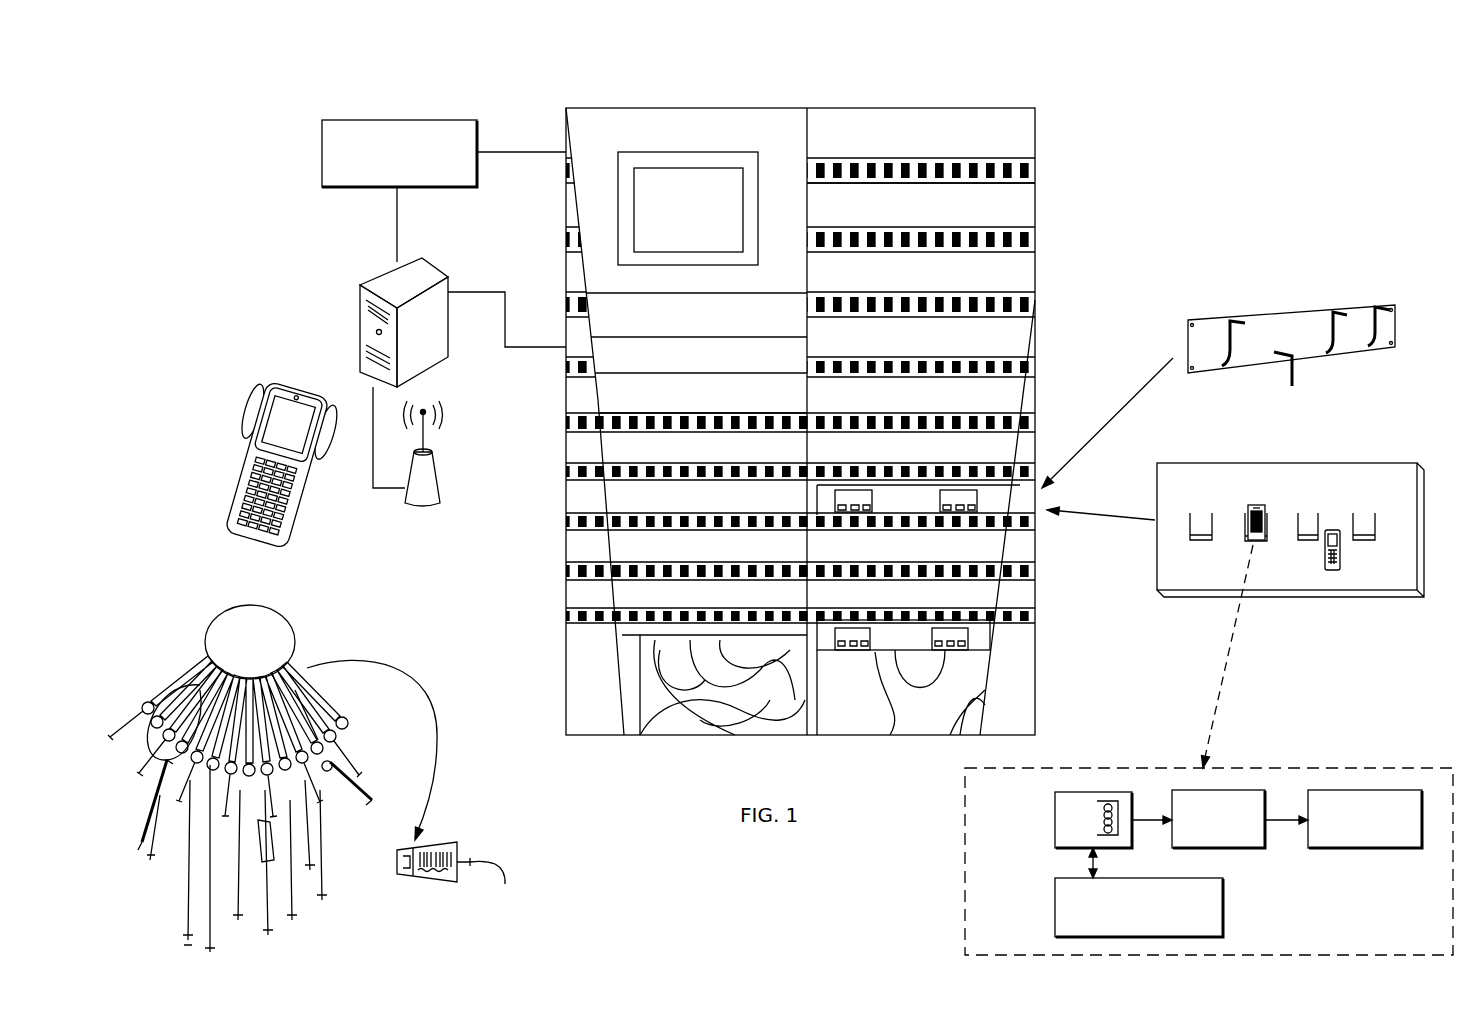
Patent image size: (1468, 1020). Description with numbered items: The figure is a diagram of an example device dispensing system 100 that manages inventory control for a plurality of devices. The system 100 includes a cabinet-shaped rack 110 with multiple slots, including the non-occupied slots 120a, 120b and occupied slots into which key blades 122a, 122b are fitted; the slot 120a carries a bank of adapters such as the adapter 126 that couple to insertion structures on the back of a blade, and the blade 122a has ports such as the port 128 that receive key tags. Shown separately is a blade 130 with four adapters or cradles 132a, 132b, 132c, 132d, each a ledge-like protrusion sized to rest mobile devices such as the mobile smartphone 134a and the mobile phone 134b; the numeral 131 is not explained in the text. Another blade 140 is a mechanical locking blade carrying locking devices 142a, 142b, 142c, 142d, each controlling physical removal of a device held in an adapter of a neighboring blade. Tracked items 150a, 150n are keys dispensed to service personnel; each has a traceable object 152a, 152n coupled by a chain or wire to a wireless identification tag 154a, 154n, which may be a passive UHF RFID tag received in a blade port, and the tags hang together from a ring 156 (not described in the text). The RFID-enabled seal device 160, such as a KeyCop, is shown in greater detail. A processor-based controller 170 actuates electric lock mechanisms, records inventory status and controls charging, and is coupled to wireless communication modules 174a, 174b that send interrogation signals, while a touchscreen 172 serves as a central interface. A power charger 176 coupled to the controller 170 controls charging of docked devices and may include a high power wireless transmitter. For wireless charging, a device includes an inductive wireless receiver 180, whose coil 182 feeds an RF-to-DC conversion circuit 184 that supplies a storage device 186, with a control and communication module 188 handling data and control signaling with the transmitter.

The device dispensing system 100 is at (202, 114).
The rack 110 is at (793, 408).
The non-occupied slot 120a is at (1000, 472).
The non-occupied slot 120b is at (998, 628).
The blade 122a is at (1035, 162).
The blade 122b is at (632, 568).
The adapter 126 is at (929, 514).
The port 128 is at (1036, 183).
The blade 130 is at (1278, 551).
The compartment interior 131 is at (1213, 496).
The adapter 132a is at (1392, 506).
The adapter 132b is at (1306, 542).
The adapter 132c is at (1255, 543).
The adapter 132d is at (1195, 542).
The mobile smartphone 134a is at (1262, 504).
The mobile phone 134b is at (1340, 548).
The blade 140 is at (1315, 341).
The locking device 142a is at (1376, 307).
The locking device 142b is at (1343, 311).
The locking device 142c is at (1293, 376).
The locking device 142d is at (1238, 318).
The item 150a is at (330, 718).
The item 150n is at (165, 705).
The traceable object 152a is at (352, 777).
The traceable object 152n is at (160, 784).
The wireless identification tag 154a is at (303, 664).
The wireless identification tag 154n is at (200, 660).
The key ring 156 is at (282, 622).
The device 160 is at (440, 855).
The controller 170 is at (428, 263).
The touchscreen 172 is at (710, 212).
The wireless communication module 174a is at (437, 481).
The wireless communication module 174b is at (284, 388).
The power charger 176 is at (462, 121).
The inductive wireless receiver 180 is at (1209, 861).
The coil 182 is at (1055, 820).
The RF-to-DC conversion circuit 184 is at (1246, 849).
The storage device 186 is at (1365, 850).
The control and communication module 188 is at (1055, 910).